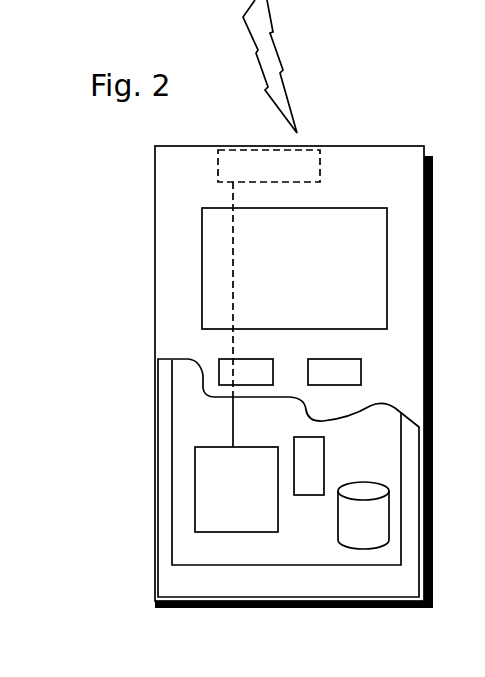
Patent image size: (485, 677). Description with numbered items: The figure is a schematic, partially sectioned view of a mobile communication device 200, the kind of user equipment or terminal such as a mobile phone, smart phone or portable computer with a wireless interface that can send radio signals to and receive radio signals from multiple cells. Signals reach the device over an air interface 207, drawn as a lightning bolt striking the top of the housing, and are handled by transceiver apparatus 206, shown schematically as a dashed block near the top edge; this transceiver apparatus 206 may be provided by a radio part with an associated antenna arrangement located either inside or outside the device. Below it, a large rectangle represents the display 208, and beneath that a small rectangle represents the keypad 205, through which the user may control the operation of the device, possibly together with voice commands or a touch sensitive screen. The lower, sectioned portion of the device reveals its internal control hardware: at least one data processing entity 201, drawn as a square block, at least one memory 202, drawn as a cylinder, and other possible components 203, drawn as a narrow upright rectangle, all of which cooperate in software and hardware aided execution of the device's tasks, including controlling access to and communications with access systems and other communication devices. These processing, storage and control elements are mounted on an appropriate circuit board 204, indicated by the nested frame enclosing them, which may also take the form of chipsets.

The communication device 200 is at (157, 185).
The data processing entity 201 is at (202, 475).
The memory 202 is at (358, 525).
The other possible components 203 is at (310, 453).
The circuit board 204 is at (193, 550).
The keypad 205 is at (222, 372).
The transceiver apparatus 206 is at (310, 160).
The air interface 207 is at (297, 88).
The display 208 is at (218, 257).